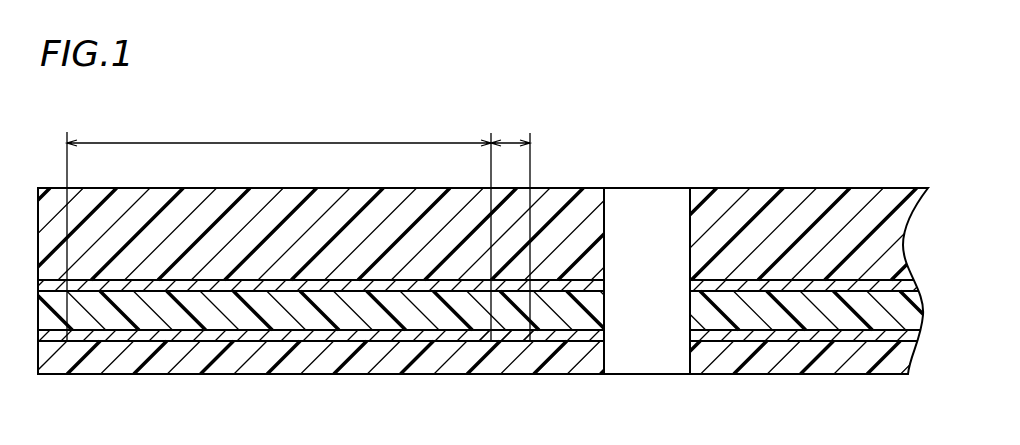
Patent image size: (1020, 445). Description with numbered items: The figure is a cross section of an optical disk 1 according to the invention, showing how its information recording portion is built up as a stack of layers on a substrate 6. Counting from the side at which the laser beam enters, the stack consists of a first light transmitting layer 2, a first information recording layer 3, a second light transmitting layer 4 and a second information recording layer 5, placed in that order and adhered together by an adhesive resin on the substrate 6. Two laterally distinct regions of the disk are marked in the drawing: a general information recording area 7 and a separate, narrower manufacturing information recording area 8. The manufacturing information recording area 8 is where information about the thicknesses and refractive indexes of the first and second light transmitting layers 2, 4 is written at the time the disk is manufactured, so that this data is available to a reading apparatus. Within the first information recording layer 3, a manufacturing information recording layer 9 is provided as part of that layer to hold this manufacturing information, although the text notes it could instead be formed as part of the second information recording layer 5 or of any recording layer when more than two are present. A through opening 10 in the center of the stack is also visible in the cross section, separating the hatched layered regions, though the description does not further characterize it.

The optical disk 1 is at (802, 187).
The first light transmitting layer 2 is at (197, 357).
The first information recording layer 3 is at (270, 335).
The second light transmitting layer 4 is at (340, 312).
The second information recording layer 5 is at (420, 283).
The substrate 6 is at (570, 217).
The general information recording area 7 is at (279, 226).
The manufacturing information recording area 8 is at (510, 226).
The manufacturing information recording layer 9 is at (510, 333).
The slot 10 is at (648, 207).